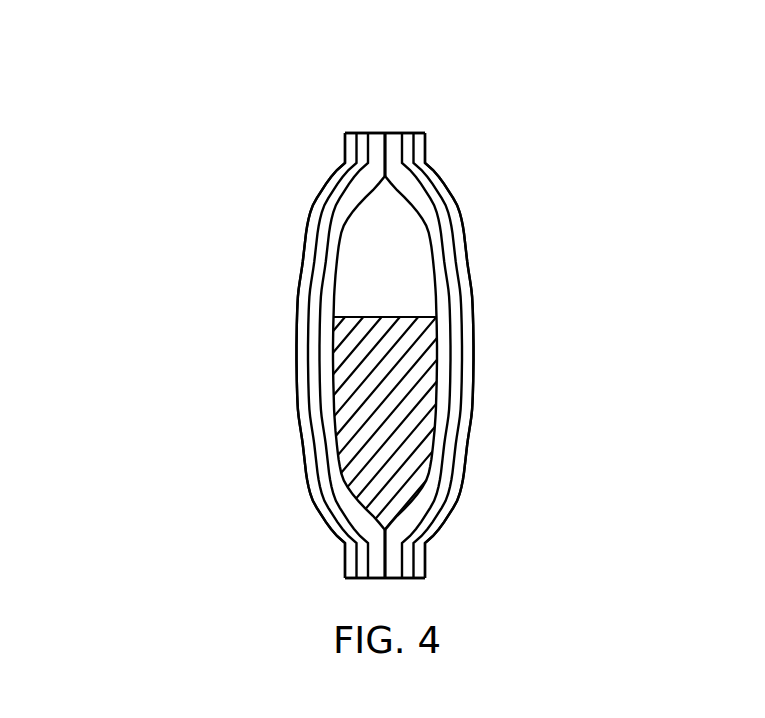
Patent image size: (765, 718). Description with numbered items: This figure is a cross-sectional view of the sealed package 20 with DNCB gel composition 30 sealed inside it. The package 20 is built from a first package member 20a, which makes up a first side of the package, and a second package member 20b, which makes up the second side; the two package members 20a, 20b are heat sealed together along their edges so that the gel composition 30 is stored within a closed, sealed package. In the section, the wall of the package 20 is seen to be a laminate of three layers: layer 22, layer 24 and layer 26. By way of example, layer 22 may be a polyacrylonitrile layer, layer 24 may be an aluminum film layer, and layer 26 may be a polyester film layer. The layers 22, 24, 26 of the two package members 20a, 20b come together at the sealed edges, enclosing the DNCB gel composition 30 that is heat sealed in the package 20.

The sealed package 20 is at (350, 307).
The first package member 20a is at (295, 213).
The second package member 20b is at (473, 215).
The layer 22 is at (391, 133).
The layer 24 is at (404, 133).
The layer 26 is at (423, 133).
The DNCB gel composition 30 is at (407, 414).